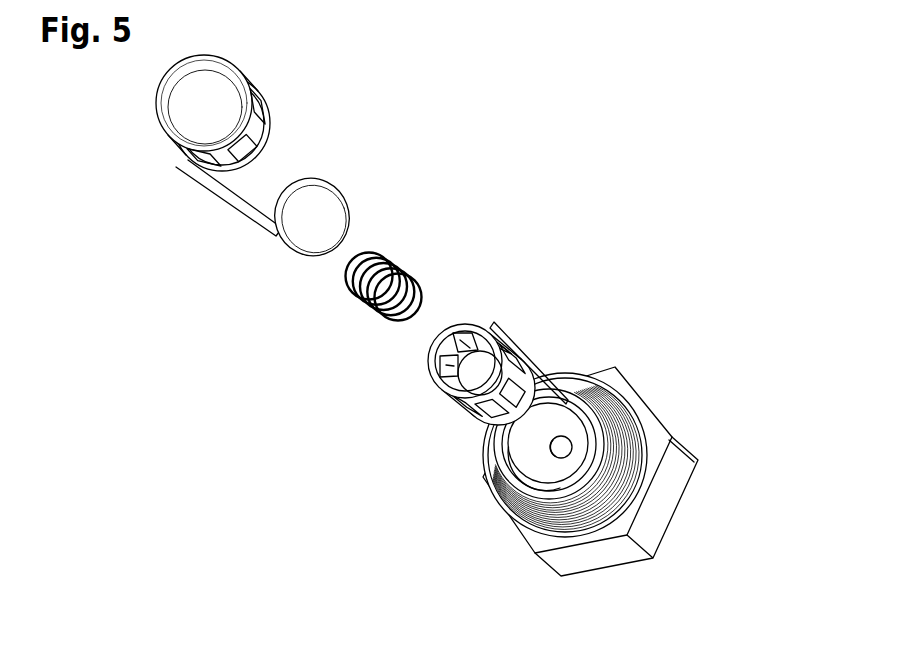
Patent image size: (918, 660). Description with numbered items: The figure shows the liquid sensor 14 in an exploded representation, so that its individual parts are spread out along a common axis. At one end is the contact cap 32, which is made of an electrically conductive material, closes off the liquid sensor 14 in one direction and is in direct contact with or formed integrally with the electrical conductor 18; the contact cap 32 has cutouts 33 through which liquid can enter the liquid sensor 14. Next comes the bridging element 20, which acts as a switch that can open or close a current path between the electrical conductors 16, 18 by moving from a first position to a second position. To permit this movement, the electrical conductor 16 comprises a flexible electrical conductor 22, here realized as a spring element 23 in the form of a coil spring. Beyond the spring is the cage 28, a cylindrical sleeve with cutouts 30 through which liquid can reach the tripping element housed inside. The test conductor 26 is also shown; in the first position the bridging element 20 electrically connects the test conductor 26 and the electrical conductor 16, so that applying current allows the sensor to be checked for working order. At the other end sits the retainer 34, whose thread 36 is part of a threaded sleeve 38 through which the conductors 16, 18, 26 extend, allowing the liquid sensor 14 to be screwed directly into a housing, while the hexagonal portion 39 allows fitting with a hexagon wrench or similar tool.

The liquid sensor 14 is at (542, 203).
The electrical conductor 16 is at (557, 443).
The electrical conductor 18 is at (232, 208).
The bridging element 20 is at (308, 233).
The flexible electrical conductor 22 is at (368, 303).
The spring element 23 is at (383, 287).
The test conductor 26 is at (548, 384).
The cage 28 is at (493, 330).
The cutouts 30 is at (443, 363).
The contact cap 32 is at (187, 105).
The cutouts 33 is at (258, 103).
The retainer 34 is at (622, 438).
The thread 36 is at (557, 450).
The threaded sleeve 38 is at (493, 446).
The hexagonal portion 39 is at (668, 477).